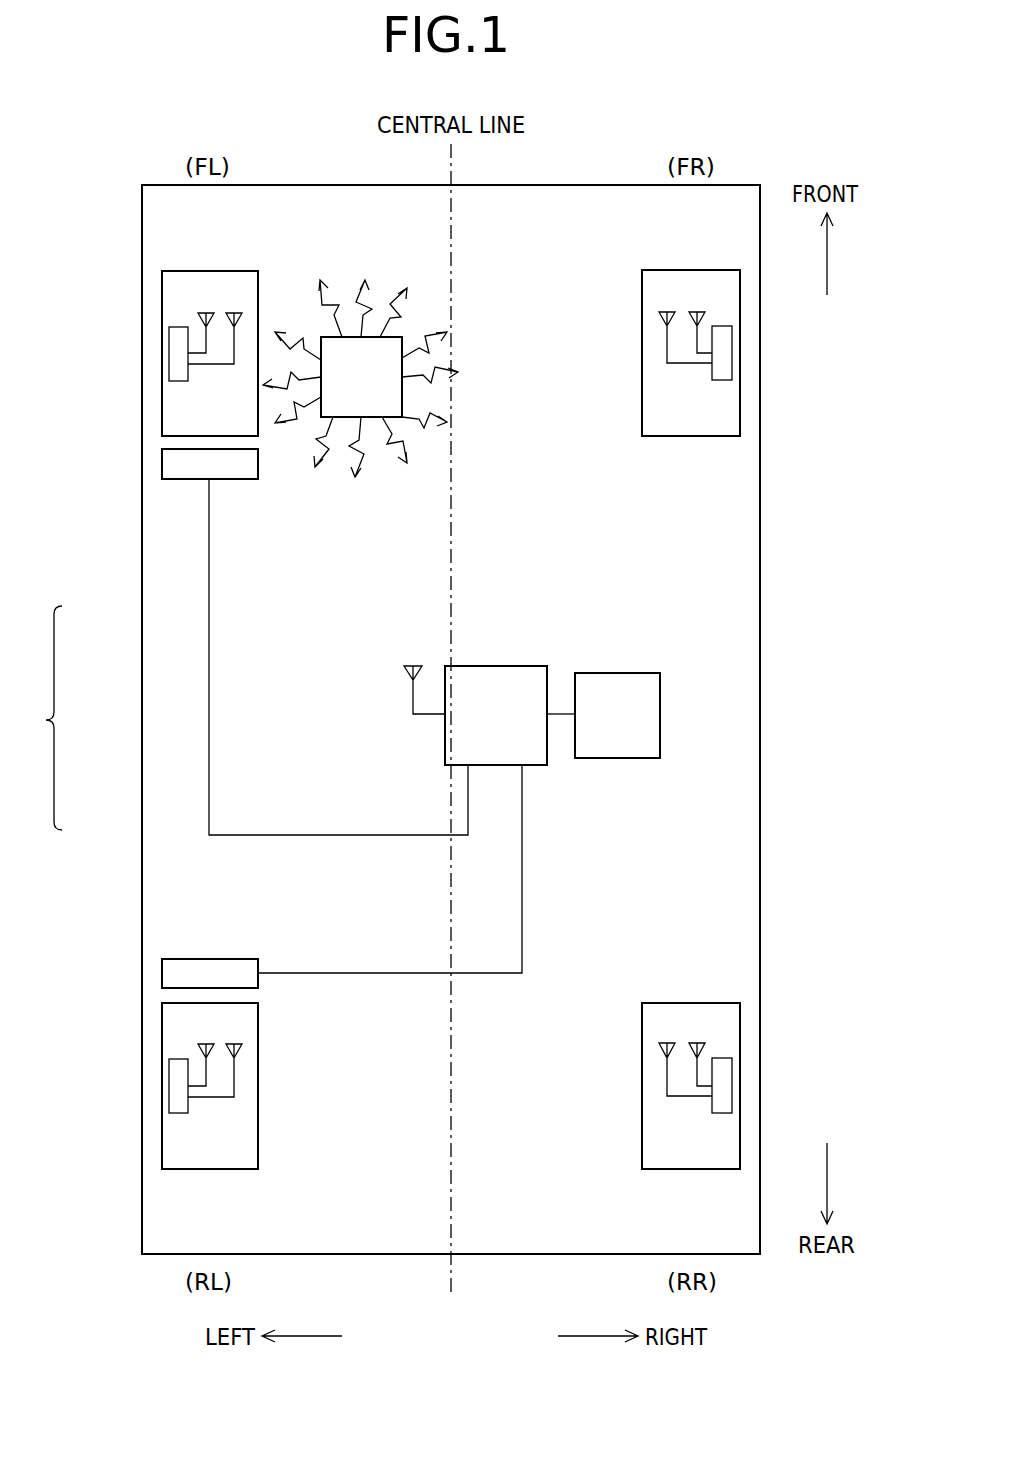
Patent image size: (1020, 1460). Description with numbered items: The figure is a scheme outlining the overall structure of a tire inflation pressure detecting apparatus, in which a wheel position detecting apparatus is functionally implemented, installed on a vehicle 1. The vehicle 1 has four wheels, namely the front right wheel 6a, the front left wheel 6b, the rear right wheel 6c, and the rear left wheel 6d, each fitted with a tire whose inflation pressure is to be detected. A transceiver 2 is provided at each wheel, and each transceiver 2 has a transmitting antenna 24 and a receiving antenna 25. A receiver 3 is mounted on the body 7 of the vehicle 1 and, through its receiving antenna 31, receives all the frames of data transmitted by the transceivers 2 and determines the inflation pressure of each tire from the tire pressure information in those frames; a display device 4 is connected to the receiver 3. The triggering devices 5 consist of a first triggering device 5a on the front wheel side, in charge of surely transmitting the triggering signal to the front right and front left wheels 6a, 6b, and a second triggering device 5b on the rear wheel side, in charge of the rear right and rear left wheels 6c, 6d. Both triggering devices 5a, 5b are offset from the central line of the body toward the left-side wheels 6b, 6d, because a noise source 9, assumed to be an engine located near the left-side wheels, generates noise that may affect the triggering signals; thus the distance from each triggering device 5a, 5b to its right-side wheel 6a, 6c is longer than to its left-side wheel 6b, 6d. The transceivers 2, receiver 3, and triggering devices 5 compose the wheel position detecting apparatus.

The vehicle 1 is at (604, 173).
The transceiver 2 is at (169, 353).
The receiver 3 is at (498, 666).
The display device 4 is at (621, 673).
The triggering devices 5 is at (273, 718).
The first triggering device 5a is at (162, 470).
The second triggering device 5b is at (162, 973).
The front right wheel 6a is at (696, 270).
The front left wheel 6b is at (203, 271).
The rear right wheel 6c is at (690, 1169).
The rear left wheel 6d is at (209, 1169).
The body 7 is at (760, 617).
The noise source 9 is at (402, 387).
The transmitting antenna 24 is at (208, 313).
The receiving antenna 25 is at (236, 313).
The receiving antenna 31 is at (413, 666).